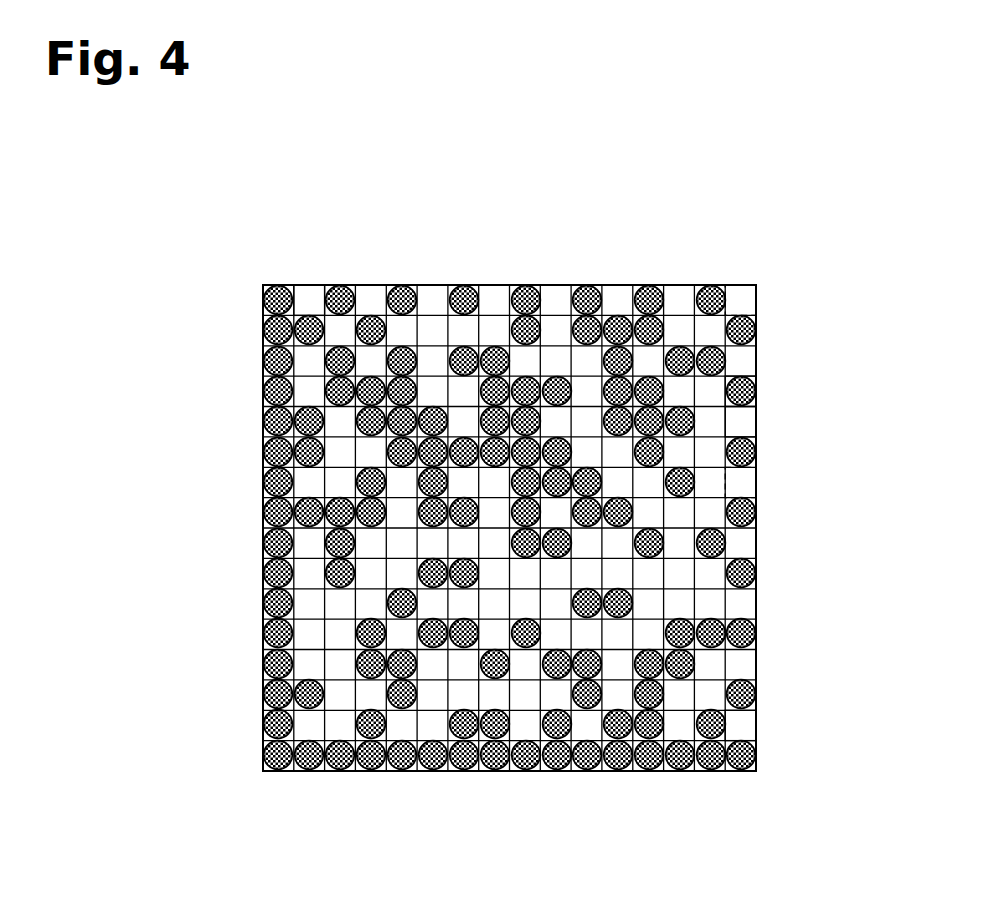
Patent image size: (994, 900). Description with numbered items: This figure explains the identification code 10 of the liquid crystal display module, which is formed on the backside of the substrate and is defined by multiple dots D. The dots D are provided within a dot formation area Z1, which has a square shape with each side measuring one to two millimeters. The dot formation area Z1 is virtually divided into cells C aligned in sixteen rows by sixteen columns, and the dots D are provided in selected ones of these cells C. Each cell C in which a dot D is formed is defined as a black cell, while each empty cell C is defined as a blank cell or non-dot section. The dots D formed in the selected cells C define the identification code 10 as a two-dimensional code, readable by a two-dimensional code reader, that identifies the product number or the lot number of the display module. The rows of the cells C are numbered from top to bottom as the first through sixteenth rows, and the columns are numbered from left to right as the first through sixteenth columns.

The identification code 10 is at (584, 258).
The cell C is at (304, 296).
The dot D is at (468, 287).
The dot formation area Z1 is at (733, 285).